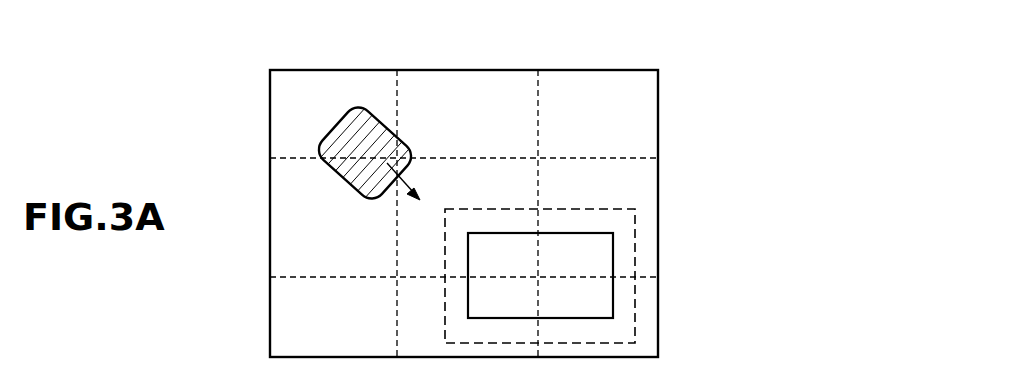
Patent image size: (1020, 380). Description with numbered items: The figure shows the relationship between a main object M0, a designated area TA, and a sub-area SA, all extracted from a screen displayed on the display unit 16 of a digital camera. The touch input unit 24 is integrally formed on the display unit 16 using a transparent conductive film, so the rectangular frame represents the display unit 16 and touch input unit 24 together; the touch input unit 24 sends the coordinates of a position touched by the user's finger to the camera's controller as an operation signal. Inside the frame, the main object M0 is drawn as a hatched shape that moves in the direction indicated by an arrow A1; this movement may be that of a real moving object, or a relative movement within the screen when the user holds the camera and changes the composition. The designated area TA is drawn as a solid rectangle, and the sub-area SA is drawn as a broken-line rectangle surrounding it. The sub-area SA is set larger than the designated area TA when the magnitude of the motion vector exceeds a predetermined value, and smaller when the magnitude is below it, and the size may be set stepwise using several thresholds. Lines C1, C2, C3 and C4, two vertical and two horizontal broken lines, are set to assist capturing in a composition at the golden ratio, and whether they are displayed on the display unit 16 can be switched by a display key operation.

The display unit 16 is at (511, 213).
The touch input unit 24 is at (659, 89).
The broken line C1 is at (397, 83).
The broken line C2 is at (538, 83).
The broken line C3 is at (298, 160).
The broken line C4 is at (298, 279).
The main object M0 is at (403, 133).
The arrow A1 is at (413, 177).
The sub-area SA is at (572, 209).
The designated area TA is at (583, 233).